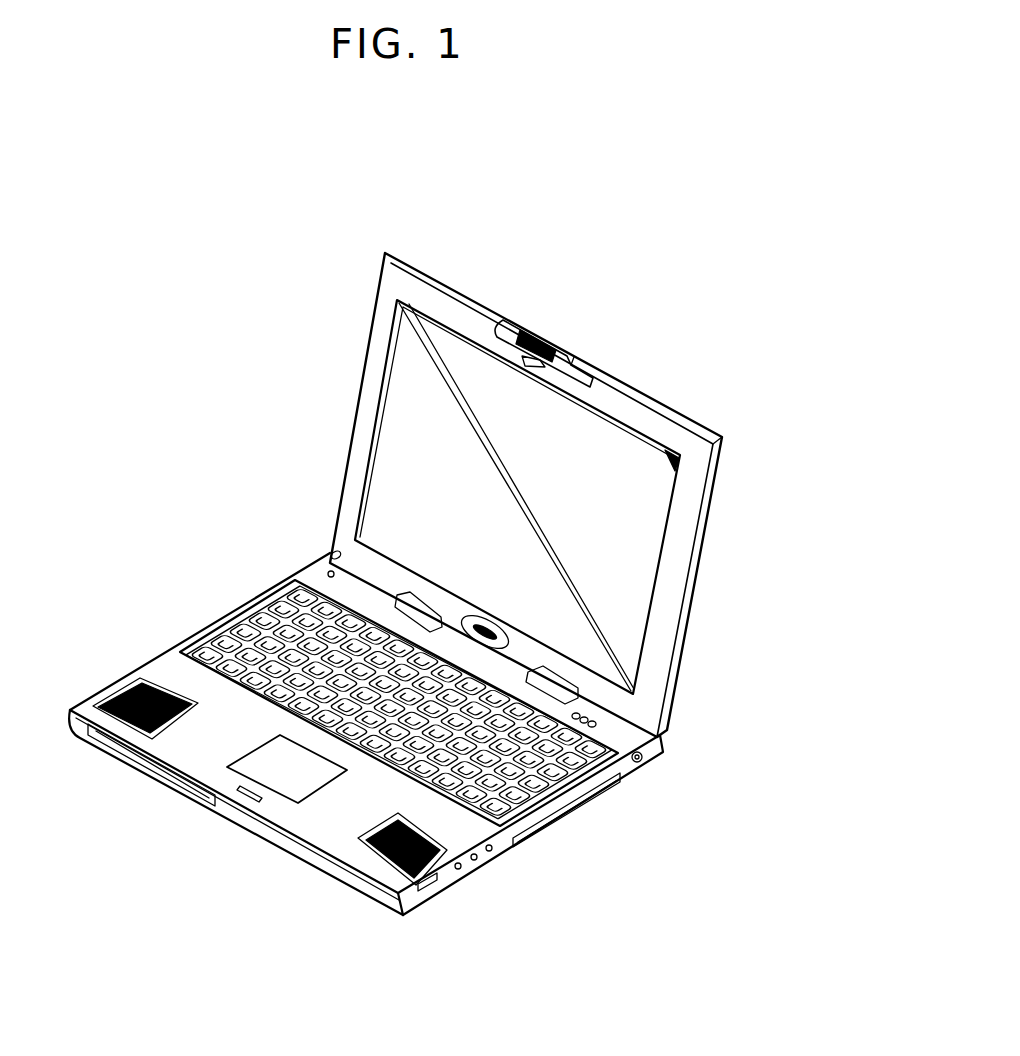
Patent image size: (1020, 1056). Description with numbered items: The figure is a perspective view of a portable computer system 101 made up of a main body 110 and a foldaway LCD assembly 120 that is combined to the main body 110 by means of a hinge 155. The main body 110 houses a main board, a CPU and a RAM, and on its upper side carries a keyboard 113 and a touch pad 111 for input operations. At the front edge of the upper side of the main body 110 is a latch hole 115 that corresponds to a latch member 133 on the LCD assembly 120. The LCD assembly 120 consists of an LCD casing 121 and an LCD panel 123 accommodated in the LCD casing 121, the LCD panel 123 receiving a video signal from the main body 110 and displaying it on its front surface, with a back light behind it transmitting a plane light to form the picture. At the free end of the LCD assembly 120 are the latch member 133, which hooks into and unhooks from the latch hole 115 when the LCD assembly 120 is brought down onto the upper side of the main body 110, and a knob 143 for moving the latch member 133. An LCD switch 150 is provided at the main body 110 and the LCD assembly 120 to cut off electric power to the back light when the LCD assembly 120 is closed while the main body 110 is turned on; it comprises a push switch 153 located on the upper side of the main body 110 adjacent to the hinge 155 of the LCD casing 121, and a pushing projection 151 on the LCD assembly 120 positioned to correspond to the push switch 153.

The portable computer system 101 is at (133, 436).
The main body 110 is at (131, 672).
The touch pad 111 is at (295, 790).
The keyboard 113 is at (242, 602).
The latch hole 115 is at (243, 790).
The foldaway LCD assembly 120 is at (677, 399).
The LCD casing 121 is at (707, 486).
The LCD panel 123 is at (649, 520).
The latch member 133 is at (518, 367).
The knob 143 is at (546, 337).
The LCD switch 150 is at (292, 499).
The pushing projection 151 is at (329, 551).
The push switch 153 is at (320, 563).
The hinge 155 is at (413, 593).